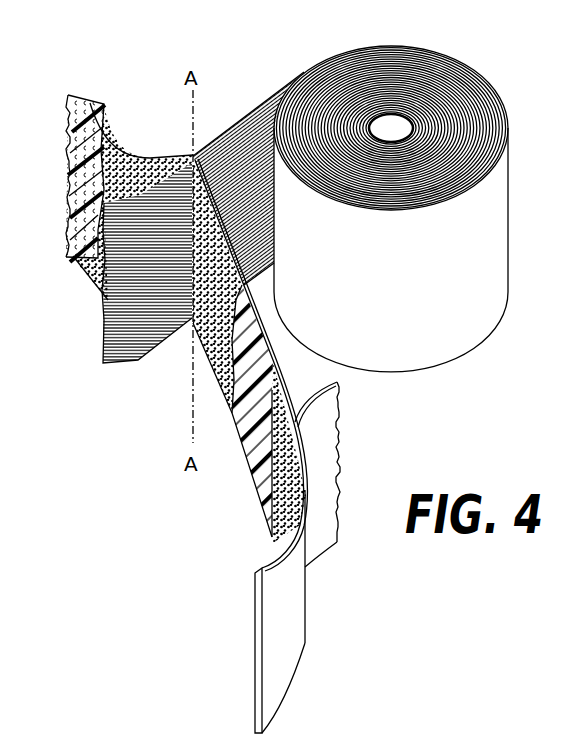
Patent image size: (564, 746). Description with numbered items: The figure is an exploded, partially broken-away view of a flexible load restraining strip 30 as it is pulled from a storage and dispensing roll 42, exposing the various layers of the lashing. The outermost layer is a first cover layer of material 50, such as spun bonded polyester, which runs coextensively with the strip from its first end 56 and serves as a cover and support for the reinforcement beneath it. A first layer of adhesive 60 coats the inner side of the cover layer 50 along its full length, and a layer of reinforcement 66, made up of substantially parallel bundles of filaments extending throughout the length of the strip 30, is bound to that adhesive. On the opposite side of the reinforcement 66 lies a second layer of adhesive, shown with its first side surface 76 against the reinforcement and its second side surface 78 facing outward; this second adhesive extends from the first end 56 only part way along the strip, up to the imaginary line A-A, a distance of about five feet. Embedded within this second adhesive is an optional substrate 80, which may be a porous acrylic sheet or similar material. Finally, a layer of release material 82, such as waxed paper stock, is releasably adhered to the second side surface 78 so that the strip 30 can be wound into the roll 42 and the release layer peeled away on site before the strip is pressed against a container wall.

The flexible load restraining strip 30 is at (142, 402).
The roll 42 is at (483, 340).
The first cover layer of material 50 is at (88, 100).
The first end 56 is at (258, 712).
The first layer of adhesive 60 is at (138, 158).
The layer of reinforcement 66 is at (93, 322).
The first side surface 76 is at (272, 528).
The second side surface 78 is at (226, 402).
The substrate 80 is at (253, 350).
The layer of release material 82 is at (307, 583).